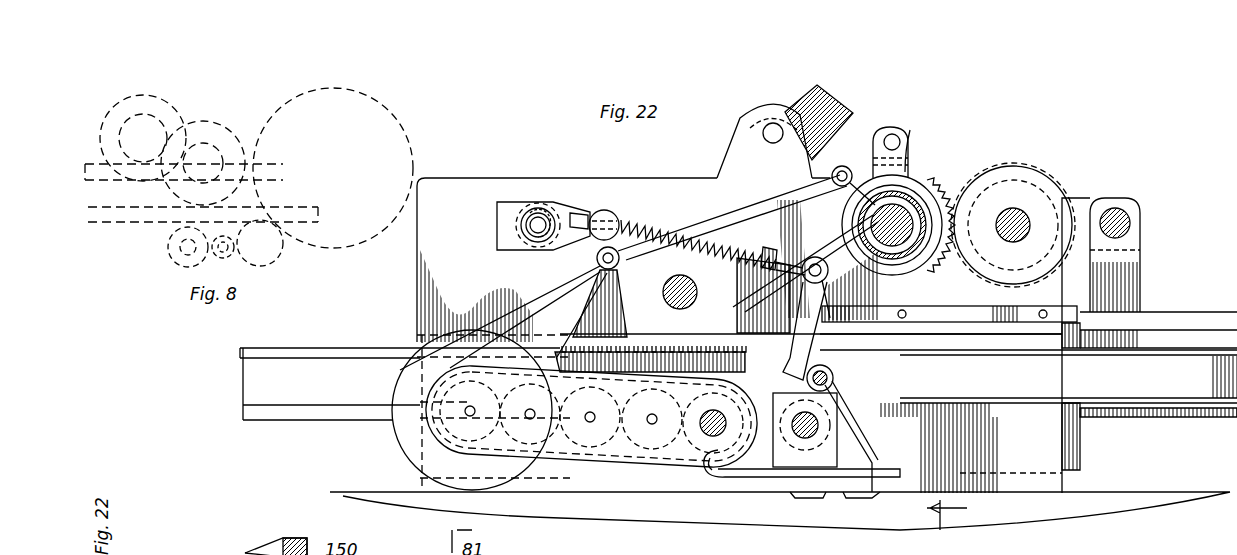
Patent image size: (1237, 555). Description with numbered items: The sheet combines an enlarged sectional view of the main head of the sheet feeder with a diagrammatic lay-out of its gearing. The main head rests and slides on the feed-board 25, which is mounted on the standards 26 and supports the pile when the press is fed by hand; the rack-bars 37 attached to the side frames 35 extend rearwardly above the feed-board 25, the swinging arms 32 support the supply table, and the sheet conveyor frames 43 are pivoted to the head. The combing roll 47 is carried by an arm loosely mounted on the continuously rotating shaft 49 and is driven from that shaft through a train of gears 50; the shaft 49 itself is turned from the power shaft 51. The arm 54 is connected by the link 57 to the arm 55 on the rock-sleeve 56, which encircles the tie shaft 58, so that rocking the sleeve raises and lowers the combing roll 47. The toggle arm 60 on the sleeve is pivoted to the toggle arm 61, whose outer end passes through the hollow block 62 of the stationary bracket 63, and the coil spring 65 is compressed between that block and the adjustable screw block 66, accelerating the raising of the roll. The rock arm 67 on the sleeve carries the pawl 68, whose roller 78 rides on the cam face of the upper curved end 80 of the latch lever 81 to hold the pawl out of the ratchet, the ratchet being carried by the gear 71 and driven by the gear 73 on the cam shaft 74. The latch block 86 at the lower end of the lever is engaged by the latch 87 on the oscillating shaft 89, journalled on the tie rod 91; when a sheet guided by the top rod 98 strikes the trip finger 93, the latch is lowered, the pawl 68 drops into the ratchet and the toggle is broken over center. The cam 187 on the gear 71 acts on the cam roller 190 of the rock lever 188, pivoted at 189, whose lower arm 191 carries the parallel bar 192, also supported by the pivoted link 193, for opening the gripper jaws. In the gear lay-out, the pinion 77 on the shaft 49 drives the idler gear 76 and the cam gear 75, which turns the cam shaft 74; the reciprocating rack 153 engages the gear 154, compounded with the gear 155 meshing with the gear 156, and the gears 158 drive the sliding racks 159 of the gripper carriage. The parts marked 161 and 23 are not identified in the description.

In FIG. 8, the gear 155 is at (170, 108).
In FIG. 8, the gear 154 is at (195, 125).
In FIG. 8, the gear 156 is at (250, 150).
In FIG. 8, the reciprocating rack 153 is at (283, 175).
In FIG. 8, the gears 158 is at (270, 120).
In FIG. 8, the sliding racks 159 is at (320, 212).
In FIG. 22, the sliding racks 159 is at (303, 387).
In FIG. 8, the power shaft 51 is at (168, 250).
In FIG. 8, the pinion 77 is at (205, 262).
In FIG. 8, the idler gear 76 is at (273, 262).
In FIG. 8, the combing roll shaft 49 is at (258, 268).
In FIG. 22, the combing roll shaft 49 is at (710, 430).
In FIG. 22, the swinging arms 32 is at (800, 100).
In FIG. 22, the cam roller 190 is at (790, 160).
In FIG. 22, the side frames 35 is at (690, 180).
In FIG. 22, the stationary bracket 63 is at (563, 207).
In FIG. 22, the hollow block 62 is at (607, 210).
In FIG. 22, the toggle arm 61 is at (640, 223).
In FIG. 22, the coil spring 65 is at (694, 204).
In FIG. 22, the link 57 is at (730, 203).
In FIG. 22, the rock lever 188 is at (780, 220).
In FIG. 22, the pivot 189 is at (756, 227).
In FIG. 22, the arm 54 is at (558, 293).
In FIG. 22, the adjustable screw block 66 is at (767, 273).
In FIG. 22, the roller 78 is at (847, 166).
In FIG. 22, the arm 55 is at (880, 132).
In FIG. 22, the pawl 68 is at (867, 147).
In FIG. 22, the rock arm 67 is at (910, 130).
In FIG. 22, the upper curved end 80 is at (900, 160).
In FIG. 22, the rock-sleeve 56 is at (913, 207).
In FIG. 22, the tie shaft 58 is at (950, 178).
In FIG. 22, the gear 73 is at (1007, 163).
In FIG. 22, the cam shaft 74 is at (1017, 210).
In FIG. 22, the bearing lug 161 is at (1222, 290).
In FIG. 22, the pivoted link 193 is at (1010, 300).
In FIG. 22, the lower arm 191 is at (870, 300).
In FIG. 22, the cam 187 is at (946, 292).
In FIG. 22, the parallel bar 192 is at (949, 314).
In FIG. 22, the latch lever 81 is at (785, 338).
In FIG. 22, the toggle arm 60 is at (827, 325).
In FIG. 22, the rail 23 is at (1028, 340).
In FIG. 22, the gear 71 is at (1000, 350).
In FIG. 22, the sheet conveyor frames 43 is at (1167, 417).
In FIG. 22, the rack-bars 37 is at (348, 338).
In FIG. 22, the combing roll 47 is at (413, 468).
In FIG. 22, the train of gears 50 is at (625, 492).
In FIG. 22, the top rod 98 is at (763, 478).
In FIG. 22, the latch 87 is at (805, 378).
In FIG. 22, the latch block 86 is at (783, 360).
In FIG. 22, the oscillating shaft 89 is at (837, 378).
In FIG. 22, the tie rod 91 is at (837, 410).
In FIG. 22, the trip finger 93 is at (870, 460).
In FIG. 22, the standards 26 is at (780, 511).
In FIG. 22, the feed-board 25 is at (947, 527).
In FIG. 22, the cam gear 75 is at (418, 138).